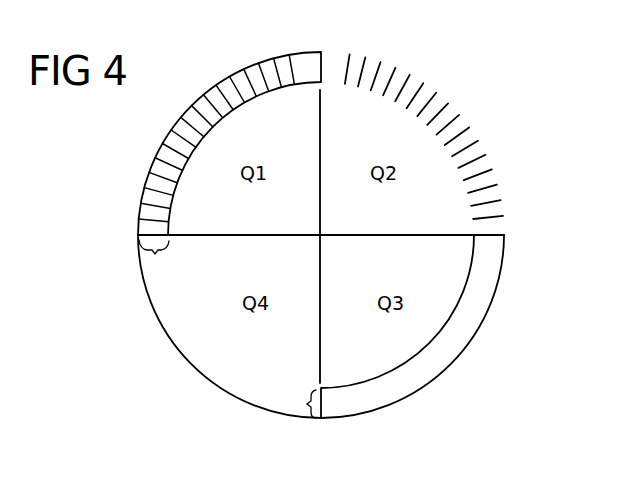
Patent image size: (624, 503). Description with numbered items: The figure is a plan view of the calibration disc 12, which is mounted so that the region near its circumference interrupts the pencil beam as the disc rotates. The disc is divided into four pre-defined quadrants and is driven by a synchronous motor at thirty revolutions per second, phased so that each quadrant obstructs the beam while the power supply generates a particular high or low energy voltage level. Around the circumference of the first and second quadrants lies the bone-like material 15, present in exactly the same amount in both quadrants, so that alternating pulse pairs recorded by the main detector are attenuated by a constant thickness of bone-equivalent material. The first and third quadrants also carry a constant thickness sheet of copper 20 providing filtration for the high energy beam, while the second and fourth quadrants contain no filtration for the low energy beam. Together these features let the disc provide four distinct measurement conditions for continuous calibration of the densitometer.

The calibration disc 12 is at (505, 290).
The bone-like material 15 is at (228, 88).
The sheet of copper 20 is at (156, 248).